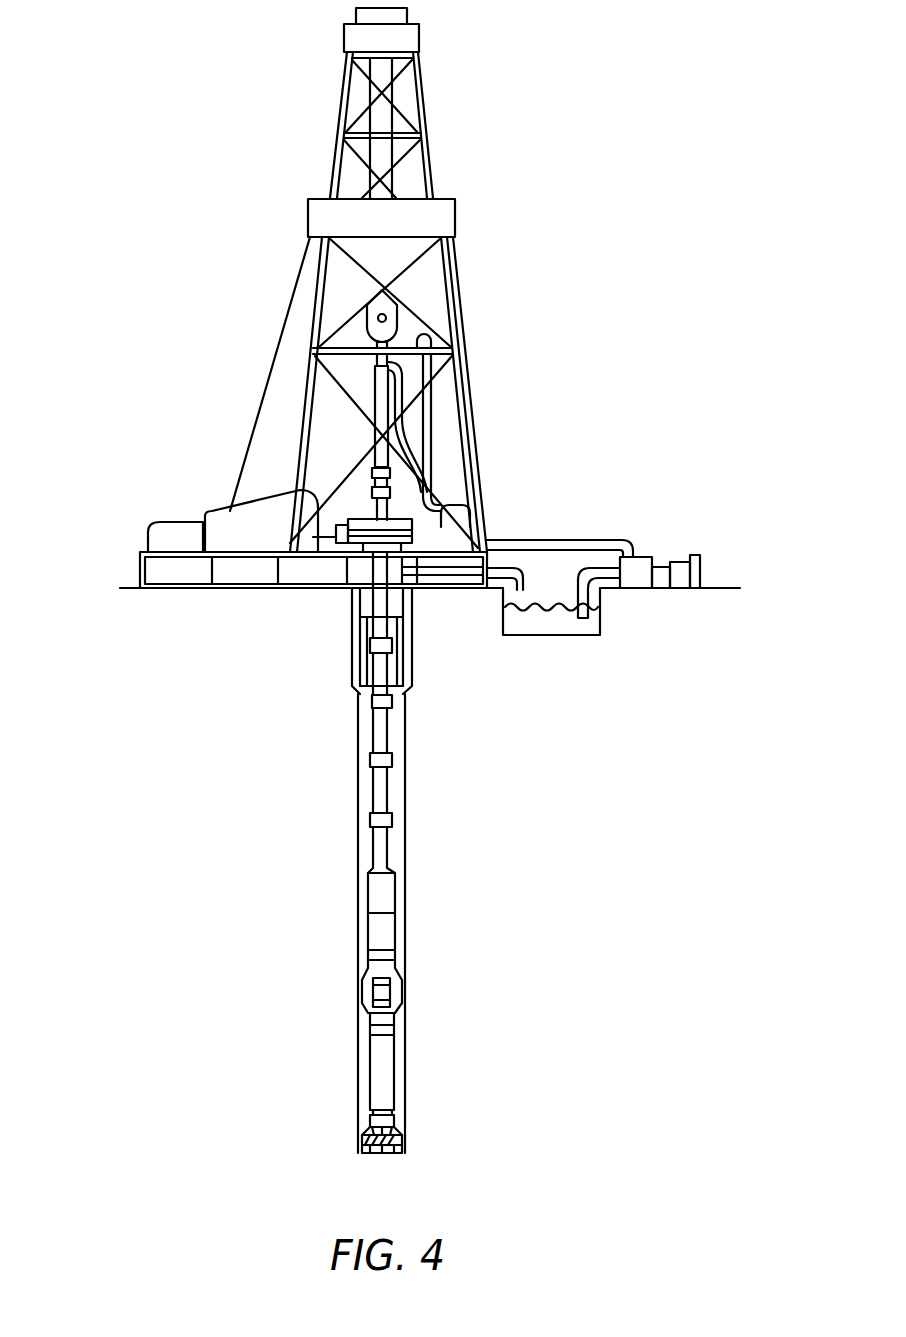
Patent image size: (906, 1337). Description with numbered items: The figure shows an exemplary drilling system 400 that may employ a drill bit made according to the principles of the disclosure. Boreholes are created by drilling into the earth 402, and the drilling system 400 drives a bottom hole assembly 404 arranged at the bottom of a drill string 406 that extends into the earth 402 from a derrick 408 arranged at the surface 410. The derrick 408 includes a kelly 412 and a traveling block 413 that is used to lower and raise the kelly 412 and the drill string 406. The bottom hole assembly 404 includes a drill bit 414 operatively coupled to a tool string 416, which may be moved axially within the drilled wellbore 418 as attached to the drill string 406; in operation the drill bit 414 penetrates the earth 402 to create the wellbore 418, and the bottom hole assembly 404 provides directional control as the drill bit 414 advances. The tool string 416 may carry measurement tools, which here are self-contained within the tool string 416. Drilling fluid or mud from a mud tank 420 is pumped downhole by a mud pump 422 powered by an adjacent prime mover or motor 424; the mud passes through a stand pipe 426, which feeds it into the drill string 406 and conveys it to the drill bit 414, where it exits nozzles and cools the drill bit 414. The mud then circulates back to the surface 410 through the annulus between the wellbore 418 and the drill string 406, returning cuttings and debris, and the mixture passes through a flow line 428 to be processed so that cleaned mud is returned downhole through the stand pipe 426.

The drilling system 400 is at (590, 208).
The earth 402 is at (235, 669).
The bottom hole assembly (BHA) 404 is at (287, 982).
The drill string 406 is at (382, 780).
The derrick 408 is at (310, 327).
The surface 410 is at (137, 587).
The kelly 412 is at (380, 395).
The traveling block 413 is at (392, 318).
The drill bit 414 is at (405, 1143).
The tool string 416 is at (382, 1055).
The wellbore 418 is at (357, 727).
The mud tank 420 is at (543, 635).
The mud pump 422 is at (632, 565).
The motor 424 is at (680, 577).
The stand pipe 426 is at (430, 438).
The flow line 428 is at (523, 573).